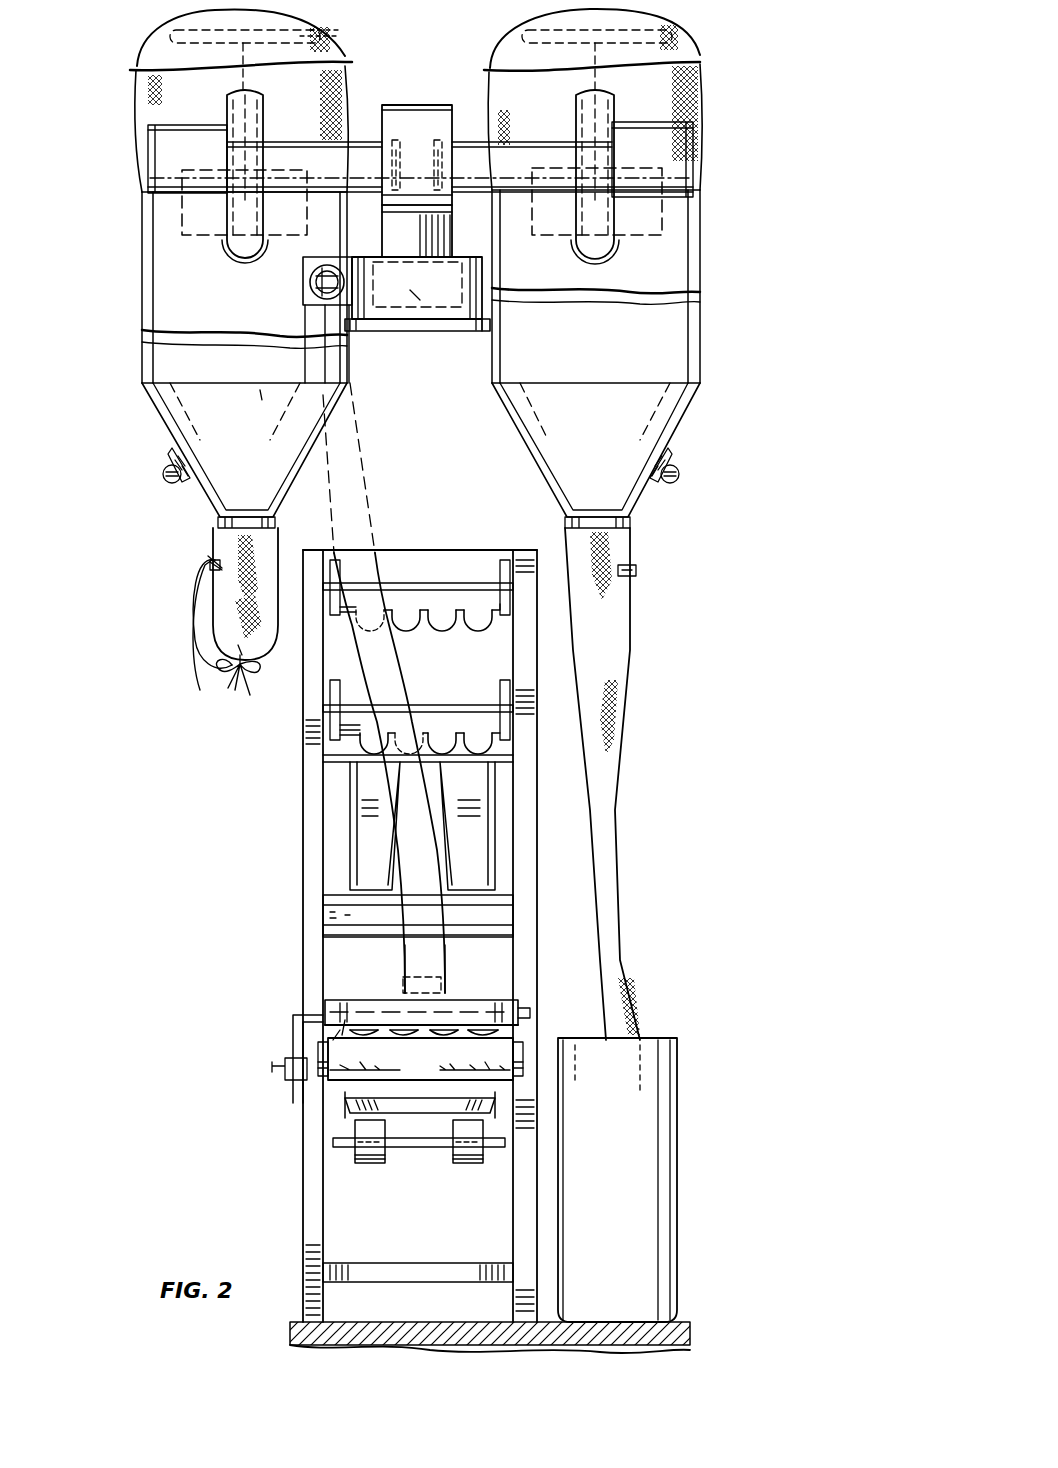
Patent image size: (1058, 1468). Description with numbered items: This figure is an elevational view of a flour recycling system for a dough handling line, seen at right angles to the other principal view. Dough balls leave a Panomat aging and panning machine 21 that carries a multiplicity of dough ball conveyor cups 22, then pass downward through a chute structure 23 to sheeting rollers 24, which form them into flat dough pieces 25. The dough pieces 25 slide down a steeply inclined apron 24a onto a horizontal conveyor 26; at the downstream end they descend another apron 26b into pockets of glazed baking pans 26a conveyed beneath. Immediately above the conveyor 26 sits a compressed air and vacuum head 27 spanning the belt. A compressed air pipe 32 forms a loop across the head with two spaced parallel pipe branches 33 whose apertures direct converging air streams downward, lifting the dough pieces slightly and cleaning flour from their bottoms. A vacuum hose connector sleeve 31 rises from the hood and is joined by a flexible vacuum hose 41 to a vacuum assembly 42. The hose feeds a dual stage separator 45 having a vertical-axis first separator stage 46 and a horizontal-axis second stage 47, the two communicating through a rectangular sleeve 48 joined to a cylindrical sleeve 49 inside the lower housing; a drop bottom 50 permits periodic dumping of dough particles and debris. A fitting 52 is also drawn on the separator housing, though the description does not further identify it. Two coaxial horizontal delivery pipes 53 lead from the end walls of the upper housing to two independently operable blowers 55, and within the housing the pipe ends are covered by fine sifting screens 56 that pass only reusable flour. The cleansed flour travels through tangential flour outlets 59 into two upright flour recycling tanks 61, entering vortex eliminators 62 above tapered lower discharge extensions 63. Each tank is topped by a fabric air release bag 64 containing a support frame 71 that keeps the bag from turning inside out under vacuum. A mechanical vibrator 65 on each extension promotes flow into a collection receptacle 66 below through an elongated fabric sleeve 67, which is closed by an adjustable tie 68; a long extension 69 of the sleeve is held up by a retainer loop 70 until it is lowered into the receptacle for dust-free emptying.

The aging and panning machine 21 is at (328, 730).
The dough ball conveyor cups 22 is at (482, 740).
The chute structure 23 is at (357, 815).
The sheeting rollers 24 is at (343, 915).
The inclined apron 24a is at (490, 957).
The dough pieces 25 is at (388, 1030).
The horizontal conveyor 26 is at (336, 1035).
The baking pans 26a is at (350, 1102).
The apron 26b is at (470, 1087).
The compressed air and vacuum head 27 is at (514, 1018).
The vacuum hose connector sleeve 31 is at (425, 985).
The compressed air pipe 32 is at (288, 1020).
The pipe branches 33 is at (472, 1022).
The flexible vacuum hose 41 is at (388, 670).
The vacuum assembly 42 is at (706, 152).
The dual stage separator 45 is at (428, 300).
The first separator stage 46 is at (486, 306).
The second stage separator section 47 is at (422, 130).
The rectangular sleeve 48 is at (470, 246).
The cylindrical sleeve 49 is at (393, 326).
The drop bottom 50 is at (472, 330).
The pipe coupling 52 is at (303, 265).
The horizontal delivery pipes 53 is at (358, 165).
The blowers 55 is at (250, 115).
The sifting screens 56 is at (417, 284).
The tangential flour outlets 59 is at (235, 245).
The flour recycling tanks 61 is at (145, 347).
The vortex eliminators 62 is at (142, 200).
The tapered lower discharge extensions 63 is at (218, 480).
The fabric air release bag 64 is at (345, 60).
The mechanical vibrator 65 is at (163, 470).
The collection receptacle 66 is at (668, 1195).
The fabric sleeve 67 is at (226, 612).
The adjustable tie 68 is at (232, 690).
The sleeve extension 69 is at (200, 680).
The retainer loop 70 is at (637, 570).
The support frame 71 is at (170, 43).